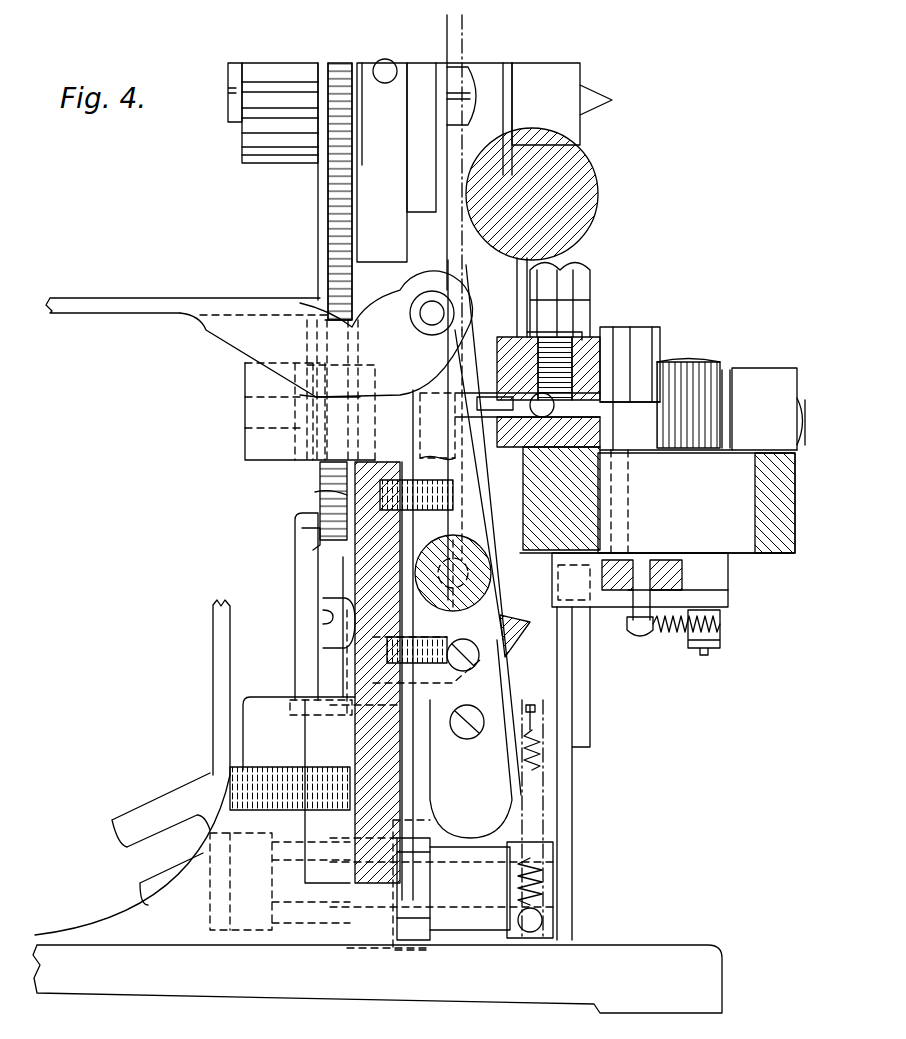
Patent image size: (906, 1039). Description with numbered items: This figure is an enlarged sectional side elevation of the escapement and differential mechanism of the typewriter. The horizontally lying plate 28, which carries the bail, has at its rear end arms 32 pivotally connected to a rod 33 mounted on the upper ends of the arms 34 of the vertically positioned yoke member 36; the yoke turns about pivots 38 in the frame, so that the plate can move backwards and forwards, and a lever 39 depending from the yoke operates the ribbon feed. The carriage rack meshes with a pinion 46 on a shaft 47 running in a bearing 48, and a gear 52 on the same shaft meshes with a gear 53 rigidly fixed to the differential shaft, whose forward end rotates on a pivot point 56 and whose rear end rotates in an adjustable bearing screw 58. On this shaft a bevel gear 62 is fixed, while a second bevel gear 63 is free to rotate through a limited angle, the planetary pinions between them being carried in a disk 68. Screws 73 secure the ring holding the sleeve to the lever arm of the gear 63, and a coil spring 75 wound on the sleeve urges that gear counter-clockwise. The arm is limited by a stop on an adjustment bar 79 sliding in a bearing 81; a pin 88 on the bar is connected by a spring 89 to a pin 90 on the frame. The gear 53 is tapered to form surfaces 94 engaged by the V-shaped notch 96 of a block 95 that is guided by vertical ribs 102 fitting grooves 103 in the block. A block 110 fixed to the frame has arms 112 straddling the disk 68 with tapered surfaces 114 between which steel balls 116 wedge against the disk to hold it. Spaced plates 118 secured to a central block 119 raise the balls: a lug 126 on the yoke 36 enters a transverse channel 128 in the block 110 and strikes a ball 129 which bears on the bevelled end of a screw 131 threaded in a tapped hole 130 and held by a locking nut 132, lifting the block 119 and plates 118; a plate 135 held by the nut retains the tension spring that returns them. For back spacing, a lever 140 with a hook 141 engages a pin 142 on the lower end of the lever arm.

The plate 28 is at (87, 303).
The arms 32 is at (227, 343).
The rod 33 is at (423, 307).
The arms 34 is at (430, 527).
The yoke member 36 is at (428, 609).
The pivots 38 is at (455, 565).
The lever 39 is at (488, 790).
The pinion 46 is at (287, 160).
The shaft 47 is at (240, 117).
The bearing 48 is at (372, 202).
The gear 52 is at (330, 260).
The gear 53 is at (328, 485).
The pivot point 56 is at (303, 415).
The bearing screw 58 is at (807, 393).
The bevel gear 62 is at (503, 300).
The bevel gear 63 is at (600, 320).
The disk 68 is at (580, 255).
The screws 73 is at (622, 390).
The coil spring 75 is at (707, 360).
The adjustment bar 79 is at (677, 597).
The bearing 81 is at (723, 585).
The pin 88 is at (643, 637).
The spring 89 is at (675, 633).
The pin 90 is at (713, 647).
The surfaces 94 is at (315, 492).
The block 95 is at (302, 580).
The V-shaped notch 96 is at (313, 528).
The vertical ribs 102 is at (332, 663).
The grooves 103 is at (327, 622).
The block 110 is at (526, 482).
The arms 112 is at (433, 435).
The tapered surfaces 114 is at (480, 463).
The steel balls 116 is at (663, 348).
The plates 118 is at (607, 400).
The block 119 is at (620, 330).
The lug 126 is at (485, 362).
The transverse channel 128 is at (548, 443).
The ball 129 is at (525, 433).
The tapped hole 130 is at (518, 270).
The screw 131 is at (588, 338).
The locking nut 132 is at (580, 280).
The plate 135 is at (546, 295).
The lever 140 is at (583, 677).
The hook 141 is at (592, 635).
The pin 142 is at (568, 613).